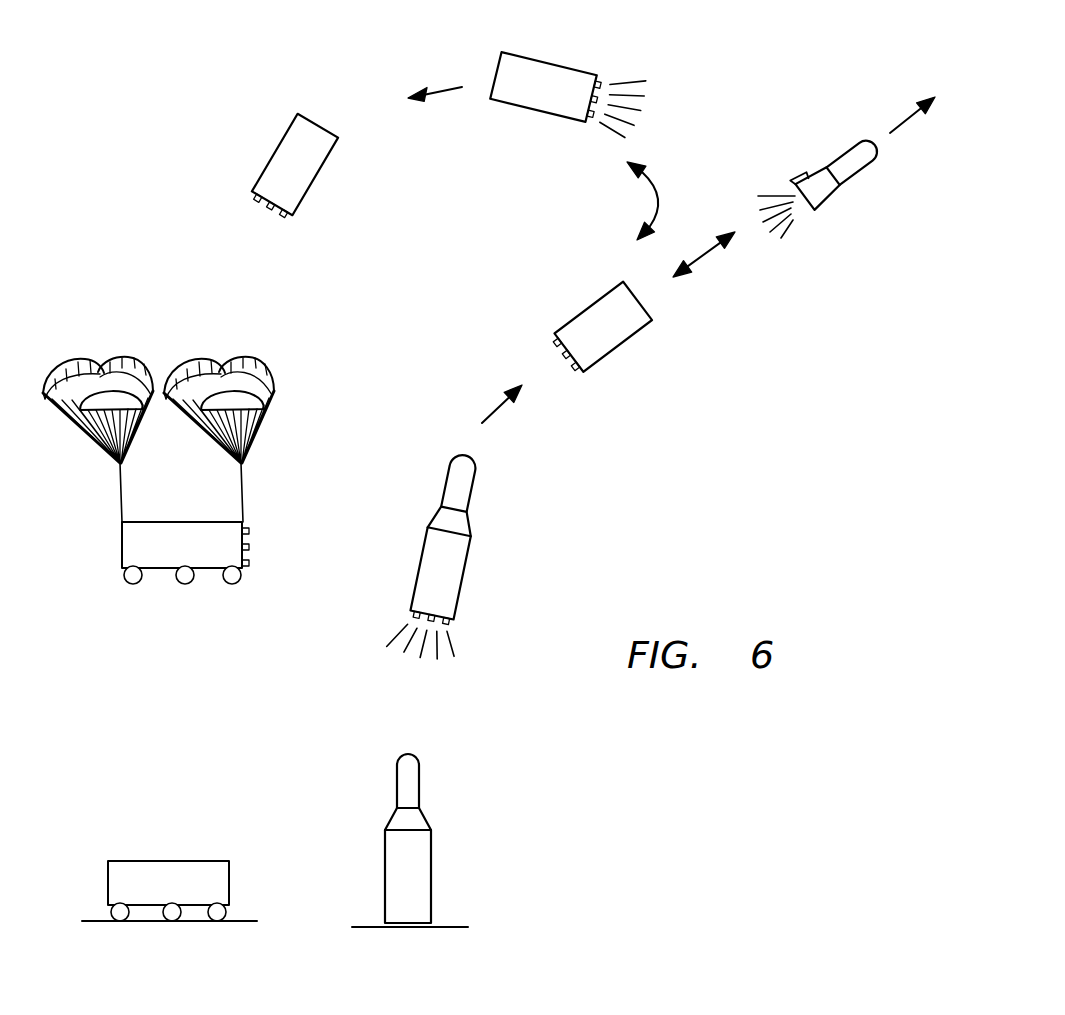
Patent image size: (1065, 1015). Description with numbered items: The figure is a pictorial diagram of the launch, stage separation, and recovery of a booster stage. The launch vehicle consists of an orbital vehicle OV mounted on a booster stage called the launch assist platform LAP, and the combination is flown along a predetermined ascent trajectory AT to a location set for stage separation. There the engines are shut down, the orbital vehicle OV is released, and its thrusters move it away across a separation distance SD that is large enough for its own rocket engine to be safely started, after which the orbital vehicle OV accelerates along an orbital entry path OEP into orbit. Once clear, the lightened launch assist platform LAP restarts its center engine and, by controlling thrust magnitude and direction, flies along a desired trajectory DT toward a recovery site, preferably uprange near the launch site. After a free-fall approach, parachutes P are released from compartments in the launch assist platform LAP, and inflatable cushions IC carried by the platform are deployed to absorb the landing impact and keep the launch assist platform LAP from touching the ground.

The launch assist platform LAP is at (553, 63).
The orbital vehicle OV is at (477, 492).
The trajectory DT is at (452, 86).
The orbital entry path OEP is at (900, 125).
The separation distance SD is at (704, 262).
The ascent trajectory AT is at (490, 413).
The parachutes P is at (117, 360).
The inflatable cushions IC is at (133, 584).